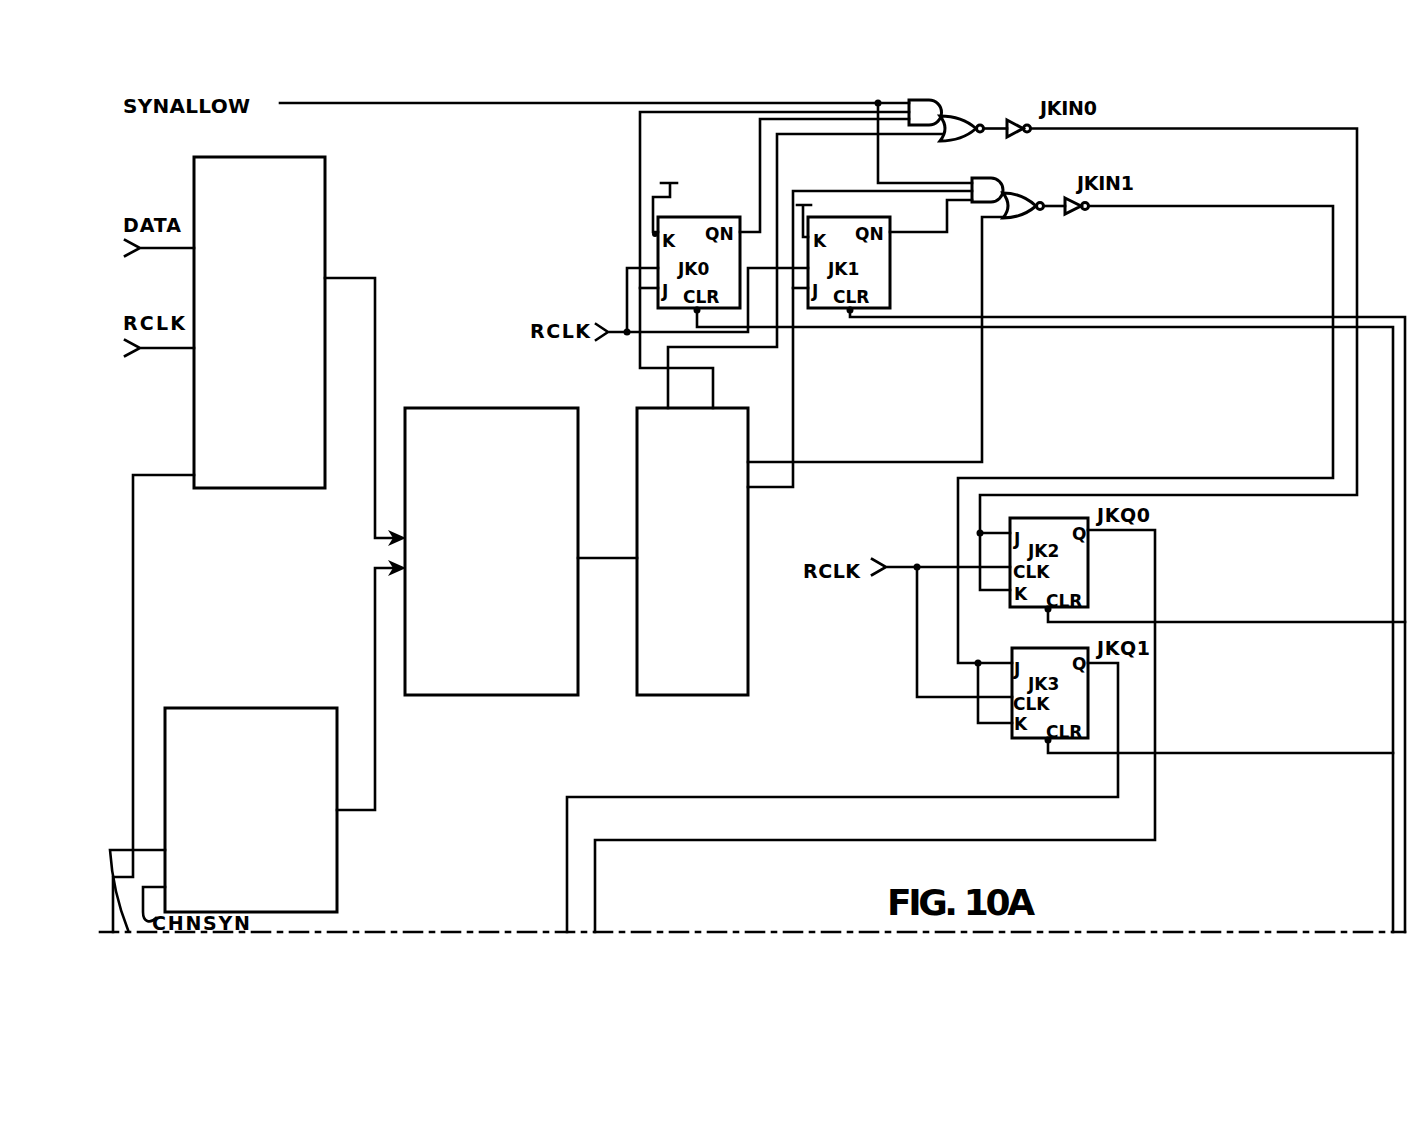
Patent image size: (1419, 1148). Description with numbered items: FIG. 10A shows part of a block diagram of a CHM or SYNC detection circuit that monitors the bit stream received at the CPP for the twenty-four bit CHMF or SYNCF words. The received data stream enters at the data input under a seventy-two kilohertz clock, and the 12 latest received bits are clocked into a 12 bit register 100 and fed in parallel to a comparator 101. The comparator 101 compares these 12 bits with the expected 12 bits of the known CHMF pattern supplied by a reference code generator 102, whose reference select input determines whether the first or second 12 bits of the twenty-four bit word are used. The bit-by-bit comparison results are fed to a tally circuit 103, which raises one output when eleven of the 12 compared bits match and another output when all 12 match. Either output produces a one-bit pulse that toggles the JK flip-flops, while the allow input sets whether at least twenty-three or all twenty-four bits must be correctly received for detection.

The 12 bit register 100 is at (325, 205).
The comparator 101 is at (452, 408).
The reference code generator 102 is at (252, 708).
The tally circuit 103 is at (750, 540).
The 12 bits 12 is at (340, 292).